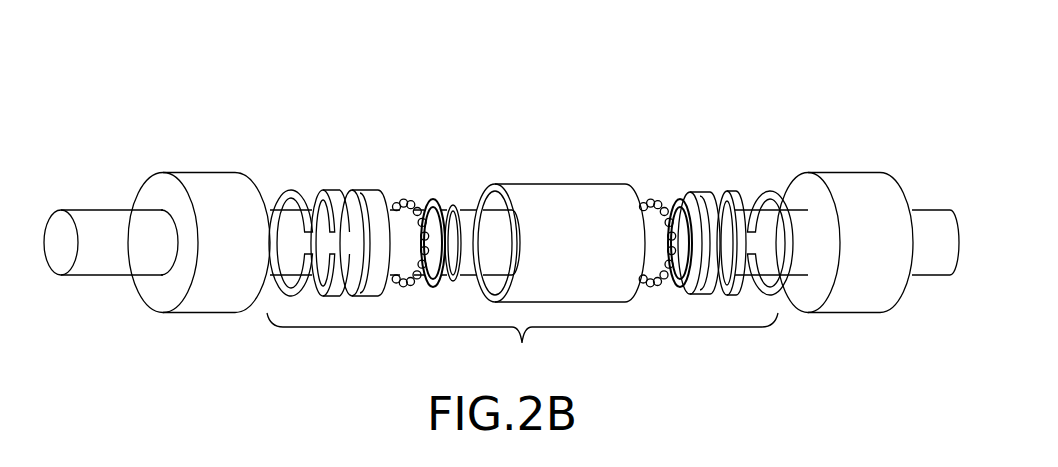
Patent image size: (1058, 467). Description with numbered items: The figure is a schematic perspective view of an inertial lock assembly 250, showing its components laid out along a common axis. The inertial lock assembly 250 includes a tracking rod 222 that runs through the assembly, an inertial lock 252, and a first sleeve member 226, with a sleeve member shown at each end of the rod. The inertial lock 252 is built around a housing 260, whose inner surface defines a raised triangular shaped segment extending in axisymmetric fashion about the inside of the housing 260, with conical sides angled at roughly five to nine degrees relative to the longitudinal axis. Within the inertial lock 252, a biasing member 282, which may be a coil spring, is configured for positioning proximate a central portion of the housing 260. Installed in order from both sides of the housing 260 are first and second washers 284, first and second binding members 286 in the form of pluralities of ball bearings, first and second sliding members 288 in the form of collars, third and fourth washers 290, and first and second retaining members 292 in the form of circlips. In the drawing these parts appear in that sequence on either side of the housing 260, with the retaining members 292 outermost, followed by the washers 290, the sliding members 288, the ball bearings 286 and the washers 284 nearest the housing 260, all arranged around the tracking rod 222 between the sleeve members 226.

The inertial lock assembly 250 is at (233, 107).
The inertial lock 252 is at (522, 347).
The tracking rod 222 is at (93, 275).
The first sleeve member 226 is at (199, 184).
The housing 260 is at (558, 189).
The biasing member 282 is at (458, 205).
The first and second washers 284 is at (429, 200).
The first and second binding members 286 is at (405, 201).
The first and second sliding members 288 is at (360, 189).
The third and fourth washers 290 is at (331, 193).
The first and second retaining members 292 is at (285, 192).